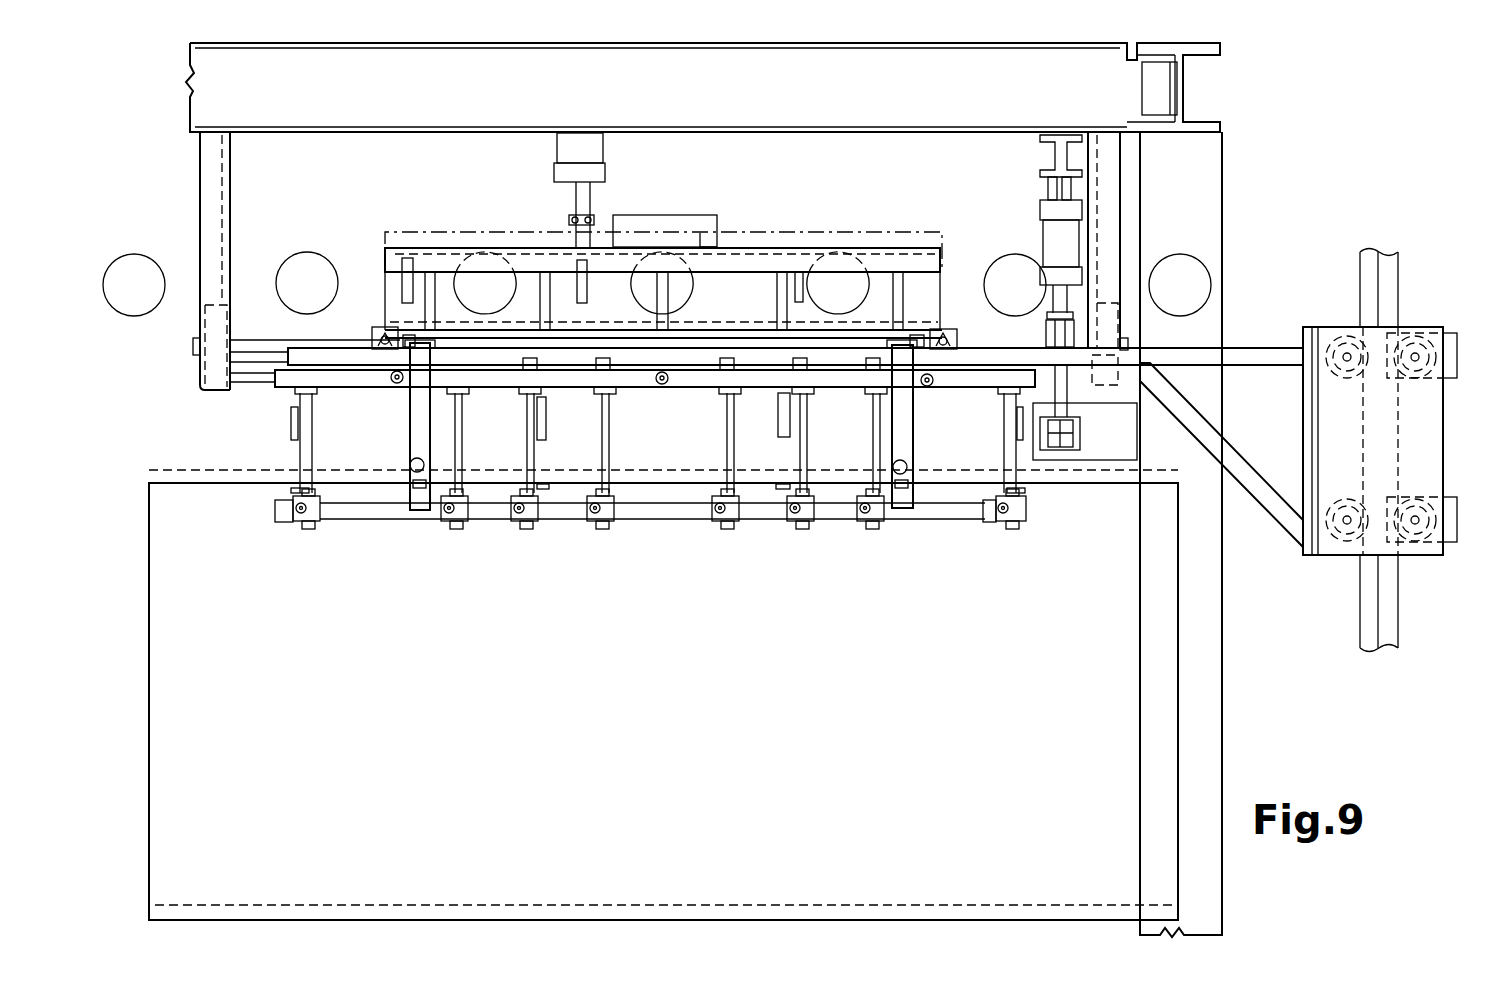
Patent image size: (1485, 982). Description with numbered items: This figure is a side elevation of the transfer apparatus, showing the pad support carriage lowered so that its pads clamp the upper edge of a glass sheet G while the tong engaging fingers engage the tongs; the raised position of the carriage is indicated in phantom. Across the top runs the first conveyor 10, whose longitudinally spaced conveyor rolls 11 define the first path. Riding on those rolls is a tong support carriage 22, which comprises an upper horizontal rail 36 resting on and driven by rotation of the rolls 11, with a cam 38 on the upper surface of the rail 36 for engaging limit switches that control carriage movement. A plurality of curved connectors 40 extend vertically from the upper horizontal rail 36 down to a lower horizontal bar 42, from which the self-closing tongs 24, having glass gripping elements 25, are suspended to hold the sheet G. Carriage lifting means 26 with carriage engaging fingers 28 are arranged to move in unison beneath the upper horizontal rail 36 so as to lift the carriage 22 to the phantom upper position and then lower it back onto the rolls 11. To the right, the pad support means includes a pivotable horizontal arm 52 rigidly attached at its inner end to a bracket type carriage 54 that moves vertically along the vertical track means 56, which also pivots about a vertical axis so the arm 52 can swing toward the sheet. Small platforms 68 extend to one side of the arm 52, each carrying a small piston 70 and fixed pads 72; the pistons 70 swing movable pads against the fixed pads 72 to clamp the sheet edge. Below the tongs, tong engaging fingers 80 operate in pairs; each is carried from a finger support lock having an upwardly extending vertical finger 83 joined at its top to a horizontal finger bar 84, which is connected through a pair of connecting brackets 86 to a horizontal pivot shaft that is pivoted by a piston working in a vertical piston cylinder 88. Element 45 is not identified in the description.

The first conveyor 10 is at (167, 228).
The conveyor rolls 11 is at (140, 316).
The tong support carriage 22 is at (437, 215).
The self-closing tongs 24 is at (290, 467).
The glass gripping elements 25 is at (292, 491).
The carriage lifting means 26 is at (404, 282).
The carriage engaging fingers 28 is at (795, 268).
The upper horizontal rail 36 is at (528, 247).
The cam 38 is at (657, 215).
The curved connectors 40 is at (660, 288).
The lower horizontal bar 42 is at (747, 328).
The end bracket 45 is at (255, 372).
The pivotable horizontal arm 52 is at (710, 350).
The bracket type carriage 54 is at (1338, 562).
The vertical track means 56 is at (1360, 276).
The small platforms 68 is at (419, 484).
The small piston 70 is at (415, 460).
The fixed pads 72 is at (916, 500).
The tong engaging fingers 80 is at (277, 516).
The vertical finger 83 is at (316, 430).
The horizontal finger bar 84 is at (692, 383).
The connecting brackets 86 is at (384, 330).
The vertical piston cylinder 88 is at (1046, 226).
The glass sheet frame G is at (226, 470).